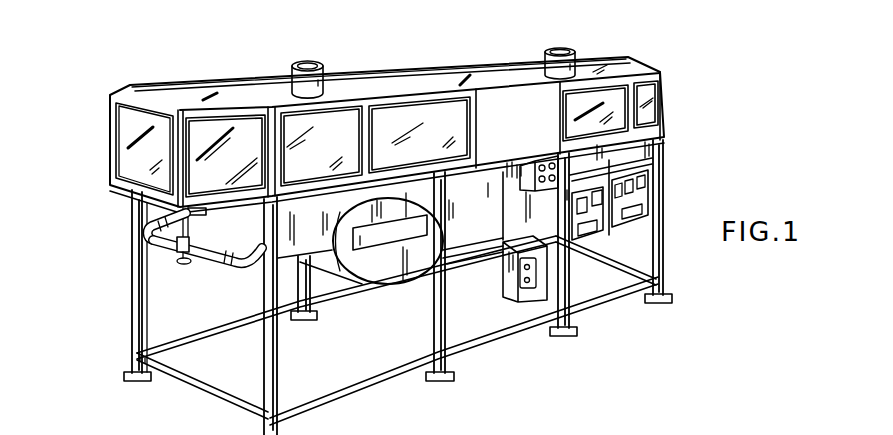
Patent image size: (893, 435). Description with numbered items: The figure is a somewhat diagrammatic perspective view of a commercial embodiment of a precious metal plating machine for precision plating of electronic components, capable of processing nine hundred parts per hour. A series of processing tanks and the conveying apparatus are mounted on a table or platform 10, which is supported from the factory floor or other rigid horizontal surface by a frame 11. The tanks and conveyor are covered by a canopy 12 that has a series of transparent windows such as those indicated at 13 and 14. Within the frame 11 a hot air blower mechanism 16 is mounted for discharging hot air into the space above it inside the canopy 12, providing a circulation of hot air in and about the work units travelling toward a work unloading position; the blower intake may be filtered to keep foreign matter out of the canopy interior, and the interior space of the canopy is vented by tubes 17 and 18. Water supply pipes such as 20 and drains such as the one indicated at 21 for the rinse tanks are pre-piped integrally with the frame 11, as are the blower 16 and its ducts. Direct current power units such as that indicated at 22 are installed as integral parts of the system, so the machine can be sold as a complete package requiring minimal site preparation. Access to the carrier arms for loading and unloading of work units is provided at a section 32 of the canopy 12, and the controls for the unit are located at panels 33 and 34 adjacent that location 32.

The table or platform 10 is at (663, 135).
The frame 11 is at (130, 305).
The canopy 12 is at (655, 63).
The transparent window 13 is at (123, 157).
The transparent window 14 is at (190, 95).
The hot air blower mechanism 16 is at (388, 277).
The vent tube 17 is at (320, 63).
The vent tube 18 is at (575, 50).
The water supply pipe 20 is at (209, 258).
The drain 21 is at (160, 245).
The direct current power unit 22 is at (602, 230).
The access section of canopy 32 is at (490, 108).
The control panel 33 is at (522, 181).
The control panel 34 is at (536, 278).